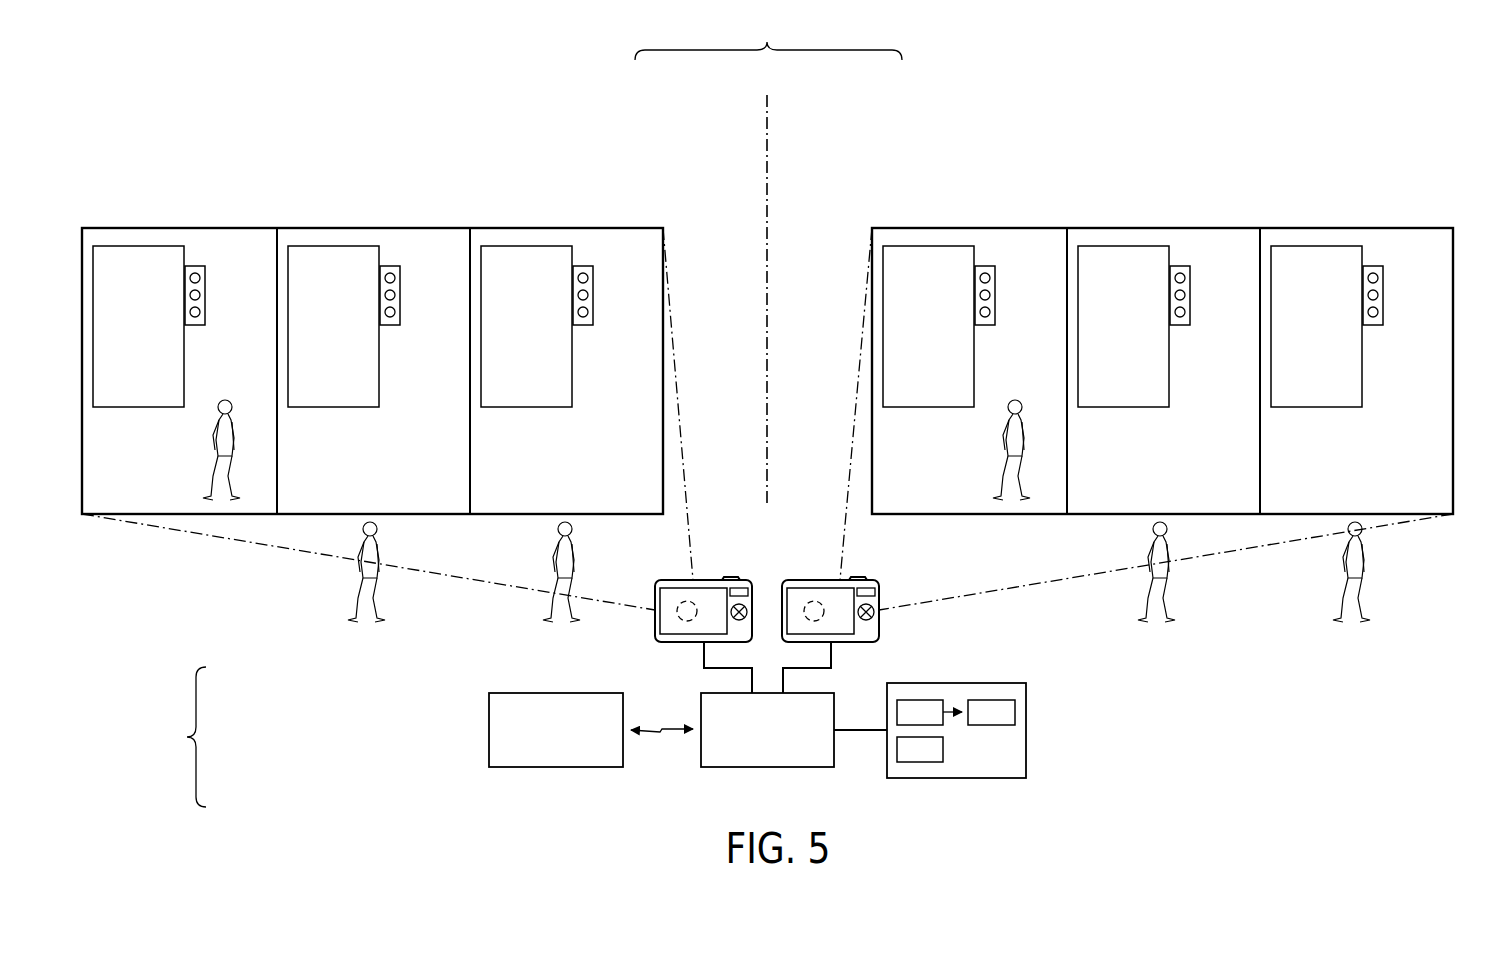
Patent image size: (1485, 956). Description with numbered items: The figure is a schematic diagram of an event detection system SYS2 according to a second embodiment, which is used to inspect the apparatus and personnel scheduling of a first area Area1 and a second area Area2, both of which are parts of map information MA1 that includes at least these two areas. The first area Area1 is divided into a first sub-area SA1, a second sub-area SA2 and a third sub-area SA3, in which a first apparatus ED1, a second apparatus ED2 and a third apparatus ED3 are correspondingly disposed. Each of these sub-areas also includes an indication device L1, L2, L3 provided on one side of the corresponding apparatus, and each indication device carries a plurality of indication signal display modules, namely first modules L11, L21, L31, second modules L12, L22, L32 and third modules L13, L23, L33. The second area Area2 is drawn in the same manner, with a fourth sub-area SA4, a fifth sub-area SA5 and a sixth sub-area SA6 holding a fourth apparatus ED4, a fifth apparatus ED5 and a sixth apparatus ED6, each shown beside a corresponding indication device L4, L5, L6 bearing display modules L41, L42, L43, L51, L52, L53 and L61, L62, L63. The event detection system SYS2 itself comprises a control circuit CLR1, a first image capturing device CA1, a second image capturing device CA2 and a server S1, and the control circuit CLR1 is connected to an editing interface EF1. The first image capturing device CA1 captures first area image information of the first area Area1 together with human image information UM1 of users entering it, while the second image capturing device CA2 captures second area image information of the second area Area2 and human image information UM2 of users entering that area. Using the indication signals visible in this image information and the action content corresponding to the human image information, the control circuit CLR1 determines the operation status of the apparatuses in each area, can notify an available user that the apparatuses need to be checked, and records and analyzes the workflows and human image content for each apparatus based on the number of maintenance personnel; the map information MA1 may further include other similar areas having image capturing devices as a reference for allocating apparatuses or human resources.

The map information MA1 is at (768, 258).
The first area Area1 is at (638, 122).
The second area Area2 is at (897, 122).
The first sub-area SA1 is at (139, 226).
The second sub-area SA2 is at (334, 226).
The third sub-area SA3 is at (527, 226).
The fourth sub-area SA4 is at (929, 226).
The fifth sub-area SA5 is at (1124, 226).
The sixth sub-area SA6 is at (1317, 226).
The indication device L1 is at (196, 262).
The indication device L2 is at (391, 262).
The indication device L3 is at (584, 262).
The fourth light-emitting device L4 is at (986, 262).
The fifth light-emitting device L5 is at (1181, 262).
The sixth light-emitting device L6 is at (1374, 262).
The first indication signal display module L11 is at (200, 312).
The second indication signal display module L12 is at (200, 295).
The third indication signal display module L13 is at (200, 278).
The first indication signal display module L21 is at (395, 312).
The second indication signal display module L22 is at (395, 295).
The third indication signal display module L23 is at (395, 278).
The first indication signal display module L31 is at (588, 312).
The second indication signal display module L32 is at (588, 295).
The third indication signal display module L33 is at (588, 278).
The light-emitting element L41 is at (990, 312).
The light-emitting element L42 is at (990, 295).
The light-emitting element L43 is at (990, 278).
The light-emitting element L51 is at (1185, 312).
The light-emitting element L52 is at (1185, 295).
The light-emitting element L53 is at (1185, 278).
The light-emitting element L61 is at (1378, 312).
The light-emitting element L62 is at (1378, 295).
The light-emitting element L63 is at (1378, 278).
The first apparatus ED1 is at (133, 408).
The second apparatus ED2 is at (328, 408).
The third apparatus ED3 is at (521, 408).
The fourth apparatus ED4 is at (923, 408).
The fifth apparatus ED5 is at (1118, 408).
The sixth apparatus ED6 is at (1311, 408).
The human image information UM1 is at (217, 468).
The human image information UM2 is at (1007, 468).
The first image capturing device CA1 is at (710, 580).
The second image capturing device CA2 is at (812, 580).
The server S1 is at (489, 730).
The control circuit CLR1 is at (745, 768).
The editing interface EF1 is at (1027, 731).
The event detection system SYS2 is at (192, 737).